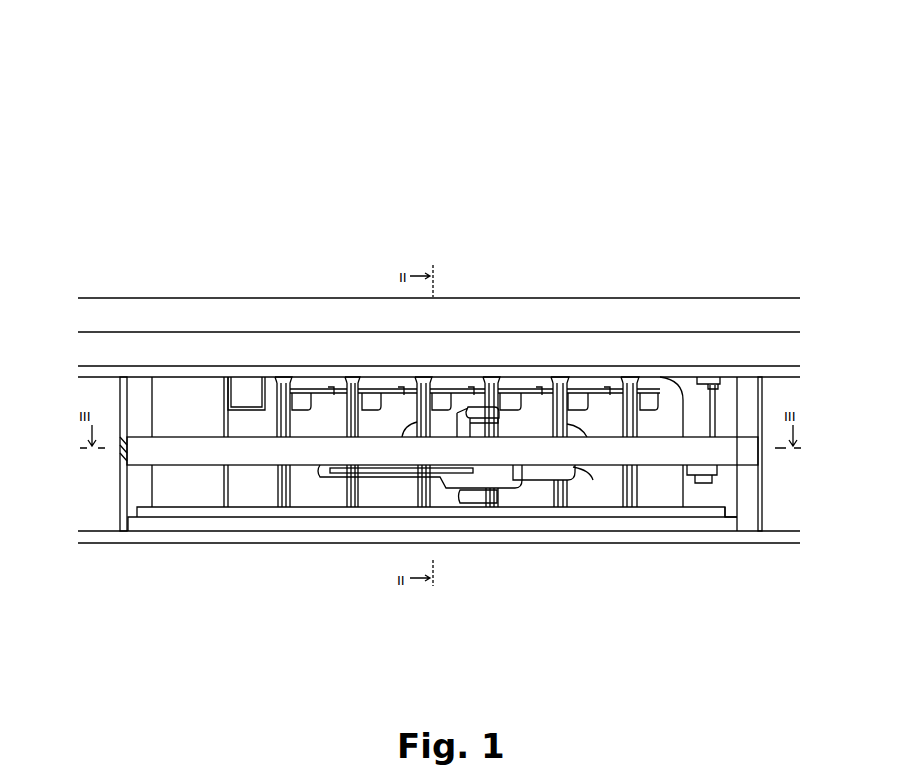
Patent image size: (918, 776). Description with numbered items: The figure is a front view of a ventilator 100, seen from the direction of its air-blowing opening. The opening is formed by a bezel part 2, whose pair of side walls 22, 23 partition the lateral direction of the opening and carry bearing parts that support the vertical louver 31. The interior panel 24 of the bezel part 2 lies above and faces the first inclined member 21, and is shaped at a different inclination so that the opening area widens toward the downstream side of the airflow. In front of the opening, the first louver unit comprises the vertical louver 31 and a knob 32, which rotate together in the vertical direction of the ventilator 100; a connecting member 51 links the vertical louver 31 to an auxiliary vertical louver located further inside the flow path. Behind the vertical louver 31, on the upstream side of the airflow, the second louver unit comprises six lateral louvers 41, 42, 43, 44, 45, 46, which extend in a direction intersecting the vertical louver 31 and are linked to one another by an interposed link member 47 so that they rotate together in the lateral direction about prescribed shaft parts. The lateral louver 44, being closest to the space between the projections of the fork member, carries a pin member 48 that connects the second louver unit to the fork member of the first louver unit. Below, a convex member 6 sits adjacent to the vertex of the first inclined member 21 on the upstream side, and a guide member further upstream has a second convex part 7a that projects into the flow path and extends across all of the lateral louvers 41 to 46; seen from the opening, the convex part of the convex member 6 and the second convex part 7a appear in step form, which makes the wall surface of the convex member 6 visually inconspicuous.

The ventilator 100 is at (172, 87).
The bezel part 2 is at (137, 562).
The first inclined member 21 is at (305, 531).
The side wall 22 is at (750, 385).
The side wall 23 is at (143, 412).
The interior panel 24 is at (690, 355).
The vertical louver 31 is at (600, 458).
The knob 32 is at (503, 487).
The lateral louver 41 is at (285, 383).
The lateral louver 42 is at (352, 383).
The lateral louver 43 is at (425, 383).
The lateral louver 44 is at (488, 383).
The lateral louver 45 is at (562, 383).
The lateral louver 46 is at (632, 383).
The link member 47 is at (333, 394).
The pin member 48 is at (467, 408).
The connecting member 51 is at (713, 420).
The convex member 6 is at (722, 517).
The second convex part 7a is at (662, 508).